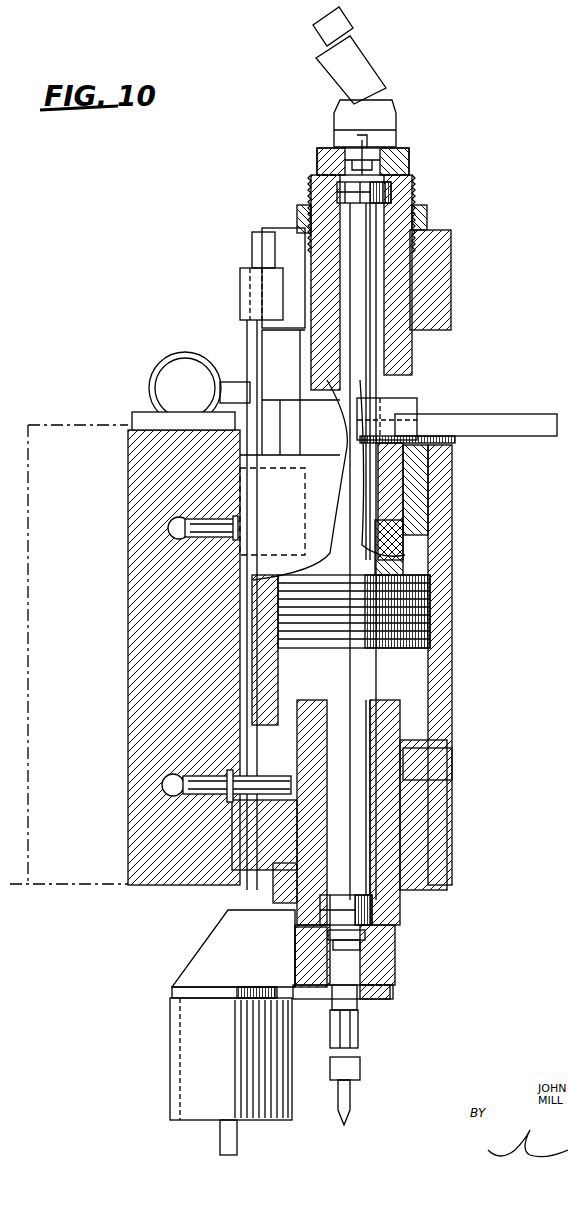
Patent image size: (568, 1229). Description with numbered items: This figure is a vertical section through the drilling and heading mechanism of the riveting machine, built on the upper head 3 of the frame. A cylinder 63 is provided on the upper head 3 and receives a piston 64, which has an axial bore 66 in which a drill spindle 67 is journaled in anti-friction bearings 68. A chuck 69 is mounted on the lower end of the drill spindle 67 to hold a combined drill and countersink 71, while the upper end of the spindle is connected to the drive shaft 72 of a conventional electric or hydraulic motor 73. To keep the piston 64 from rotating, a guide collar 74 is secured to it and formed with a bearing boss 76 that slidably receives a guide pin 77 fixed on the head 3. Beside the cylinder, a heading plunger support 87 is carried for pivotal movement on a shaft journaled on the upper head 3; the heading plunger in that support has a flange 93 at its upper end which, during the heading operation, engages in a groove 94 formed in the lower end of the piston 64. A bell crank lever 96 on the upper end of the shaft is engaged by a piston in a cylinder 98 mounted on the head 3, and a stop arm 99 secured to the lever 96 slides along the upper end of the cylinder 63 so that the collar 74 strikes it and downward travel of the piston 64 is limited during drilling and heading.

The upper head 3 is at (132, 472).
The cylinder 63 is at (453, 696).
The piston 64 is at (432, 655).
The axial bore 66 is at (381, 347).
The drill spindle 67 is at (358, 1028).
The anti-friction bearings 68 is at (392, 196).
The chuck 69 is at (358, 1070).
The combined drill and countersink 71 is at (352, 1118).
The drive shaft 72 is at (385, 168).
The motor 73 is at (395, 120).
The guide collar 74 is at (452, 278).
The bearing boss 76 is at (242, 290).
The guide pin 77 is at (252, 250).
The heading plunger support 87 is at (172, 1068).
The flange 93 is at (190, 990).
The groove 94 is at (386, 1004).
The bell crank lever 96 is at (240, 390).
The cylinder 98 is at (172, 378).
The stop arm 99 is at (537, 432).